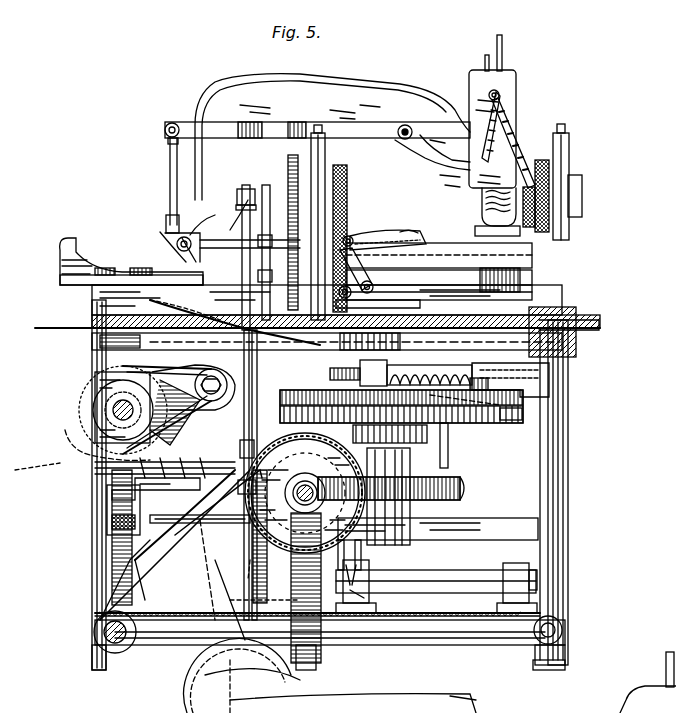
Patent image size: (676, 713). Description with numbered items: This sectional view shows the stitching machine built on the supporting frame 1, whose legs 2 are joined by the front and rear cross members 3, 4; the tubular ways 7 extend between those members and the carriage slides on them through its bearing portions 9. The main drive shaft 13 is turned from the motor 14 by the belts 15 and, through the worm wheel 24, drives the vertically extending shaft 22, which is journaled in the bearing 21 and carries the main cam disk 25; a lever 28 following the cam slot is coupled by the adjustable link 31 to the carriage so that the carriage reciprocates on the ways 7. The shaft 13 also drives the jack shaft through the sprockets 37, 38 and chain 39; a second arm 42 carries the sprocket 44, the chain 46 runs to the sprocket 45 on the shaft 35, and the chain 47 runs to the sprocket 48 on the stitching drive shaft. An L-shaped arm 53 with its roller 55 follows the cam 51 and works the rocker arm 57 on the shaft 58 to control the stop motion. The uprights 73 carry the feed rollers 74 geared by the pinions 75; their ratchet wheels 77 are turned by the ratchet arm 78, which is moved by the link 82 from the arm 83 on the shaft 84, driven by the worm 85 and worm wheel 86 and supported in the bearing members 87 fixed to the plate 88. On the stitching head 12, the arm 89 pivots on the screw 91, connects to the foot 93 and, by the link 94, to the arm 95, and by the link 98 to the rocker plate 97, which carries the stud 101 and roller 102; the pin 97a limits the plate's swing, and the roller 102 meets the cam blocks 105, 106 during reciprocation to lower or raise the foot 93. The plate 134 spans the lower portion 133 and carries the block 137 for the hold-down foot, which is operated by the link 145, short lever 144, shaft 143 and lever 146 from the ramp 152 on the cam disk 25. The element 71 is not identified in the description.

The arm 71 is at (213, 88).
The arm 89 is at (272, 124).
The screw 91 is at (408, 126).
The link 94 is at (470, 110).
The stitching head 12 is at (516, 100).
The arm 95 is at (512, 150).
The uprights or standards 73 is at (565, 158).
The feed rollers 74 is at (550, 174).
The link 98 is at (168, 175).
The pinions 75 is at (290, 172).
The ratchet arm 78 is at (262, 198).
The sprocket 48 is at (236, 196).
The plate 134 is at (403, 230).
The block 137 is at (356, 232).
The lower portion of the stitching mechanism 133 is at (422, 232).
The foot 93 is at (480, 218).
The roller 102 is at (186, 235).
The cam block 105 is at (68, 246).
The pin 97a is at (160, 240).
The stud 101 is at (168, 240).
The plate member or rocker arm 97 is at (160, 248).
The cam block 106 is at (162, 262).
The link 145 is at (358, 250).
The short lever 144 is at (378, 283).
The shaft 143 is at (376, 290).
The lever 146 is at (352, 300).
The link 82 is at (186, 300).
The ratchet wheels 77 is at (235, 311).
The chain 47 is at (95, 318).
The rear cross member 4 is at (98, 350).
The sprocket 44 is at (120, 378).
The second arm 42 is at (118, 388).
The chain 46 is at (80, 410).
The shaft 35 is at (110, 412).
The sprocket 45 is at (95, 432).
The sprocket 37 is at (31, 473).
The L-shaped arm 53 is at (95, 462).
The bearing portions 9 is at (258, 475).
The tubular ways 7 is at (281, 475).
The bearing 21 is at (398, 378).
The ramp or cam 152 is at (418, 410).
The main cam disk 25 is at (440, 416).
The adjustable link 31 is at (412, 485).
The front cross member 3 is at (576, 343).
The lever 28 is at (575, 378).
The supporting frame 1 is at (570, 418).
The cam 51 is at (500, 424).
The roller 55 is at (302, 472).
The worm wheel 24 is at (454, 490).
The legs 2 is at (566, 530).
The main drive shaft 13 is at (305, 548).
The shaft 58 is at (142, 502).
The rocker arm 57 is at (185, 492).
The worm 85 is at (245, 500).
The chain 39 is at (150, 540).
The sprocket 38 is at (185, 535).
The belts 15 is at (216, 582).
The arm 83 is at (258, 568).
The vertically extending shaft 22 is at (400, 558).
The bearing members 87 is at (528, 575).
The shaft 84 is at (420, 592).
The worm wheel 86 is at (326, 648).
The plate 88 is at (478, 620).
The motor 14 is at (192, 694).